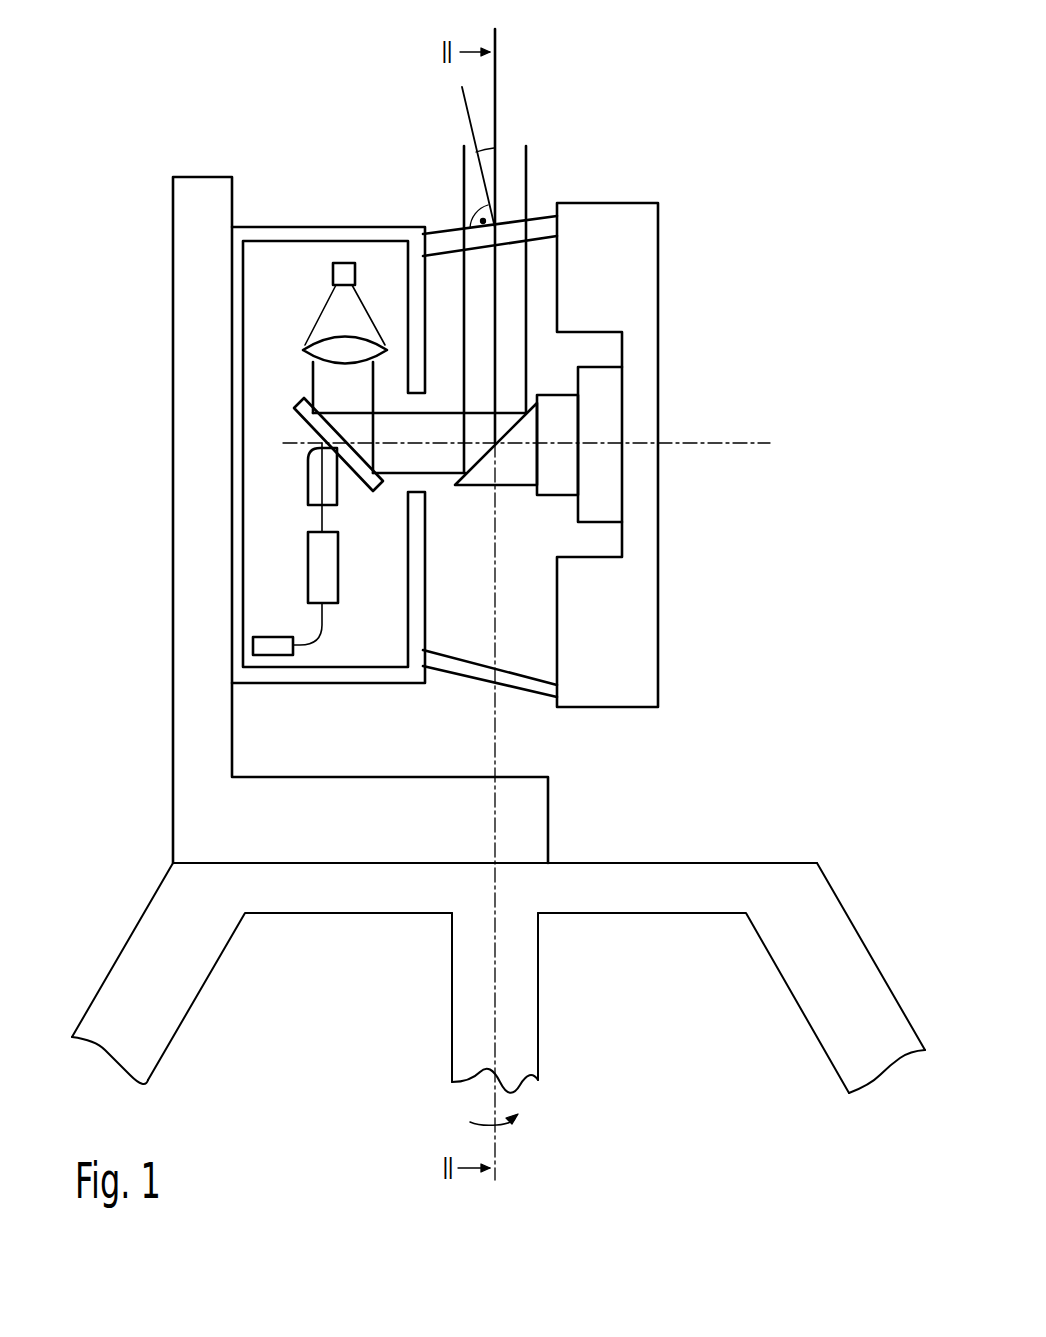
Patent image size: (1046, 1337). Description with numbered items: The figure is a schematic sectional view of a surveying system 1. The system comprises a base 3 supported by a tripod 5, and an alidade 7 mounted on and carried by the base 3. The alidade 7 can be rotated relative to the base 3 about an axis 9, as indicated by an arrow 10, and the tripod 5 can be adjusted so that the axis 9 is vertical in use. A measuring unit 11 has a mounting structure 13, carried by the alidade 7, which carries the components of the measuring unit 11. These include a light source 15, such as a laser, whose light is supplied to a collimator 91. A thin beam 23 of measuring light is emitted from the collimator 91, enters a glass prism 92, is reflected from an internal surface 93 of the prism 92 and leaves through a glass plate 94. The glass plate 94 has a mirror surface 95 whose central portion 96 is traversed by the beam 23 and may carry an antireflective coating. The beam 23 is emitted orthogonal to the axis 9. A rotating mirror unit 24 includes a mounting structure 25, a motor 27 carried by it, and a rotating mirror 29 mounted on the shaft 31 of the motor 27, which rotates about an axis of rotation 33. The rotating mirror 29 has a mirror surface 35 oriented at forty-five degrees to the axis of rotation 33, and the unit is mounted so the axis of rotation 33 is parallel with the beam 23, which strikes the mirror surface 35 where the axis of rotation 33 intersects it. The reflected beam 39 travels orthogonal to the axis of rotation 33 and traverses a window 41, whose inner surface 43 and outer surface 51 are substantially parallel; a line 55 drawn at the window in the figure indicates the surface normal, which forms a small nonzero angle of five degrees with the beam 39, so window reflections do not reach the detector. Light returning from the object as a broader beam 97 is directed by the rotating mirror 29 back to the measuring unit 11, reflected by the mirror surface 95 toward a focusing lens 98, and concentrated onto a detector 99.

The surveying system 1 is at (736, 83).
The base 3 is at (498, 975).
The tripod 5 is at (909, 980).
The alidade 7 is at (337, 520).
The axis 9 is at (514, 1003).
The arrow 10 is at (504, 1150).
The measuring unit 11 is at (290, 143).
The mounting structure 13 is at (328, 426).
The light source 15 is at (273, 616).
The beam of measuring light 23 is at (419, 450).
The rotating mirror unit 24 is at (578, 145).
The mounting structure 25 is at (607, 425).
The motor 27 is at (656, 355).
The rotating mirror 29 is at (543, 471).
The shaft 31 is at (581, 462).
The axis of rotation 33 is at (519, 460).
The mirror surface 35 is at (496, 424).
The beam of measuring light 39 is at (521, 604).
The window 41 is at (508, 461).
The inner surface 43 is at (495, 309).
The outer surface 51 is at (491, 207).
The tilted axis 55 is at (453, 157).
The broader beam 97 is at (531, 120).
The collimator 91 is at (296, 588).
The glass prism 92 is at (295, 478).
The internal surface 93 is at (279, 460).
The glass plate 94 is at (322, 424).
The mirror surface 95 is at (293, 355).
The central portion 96 is at (399, 410).
The focusing lens 98 is at (349, 325).
The detector 99 is at (333, 302).